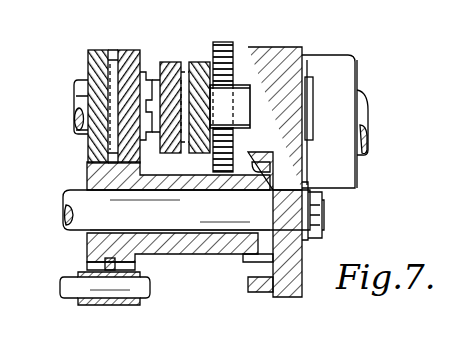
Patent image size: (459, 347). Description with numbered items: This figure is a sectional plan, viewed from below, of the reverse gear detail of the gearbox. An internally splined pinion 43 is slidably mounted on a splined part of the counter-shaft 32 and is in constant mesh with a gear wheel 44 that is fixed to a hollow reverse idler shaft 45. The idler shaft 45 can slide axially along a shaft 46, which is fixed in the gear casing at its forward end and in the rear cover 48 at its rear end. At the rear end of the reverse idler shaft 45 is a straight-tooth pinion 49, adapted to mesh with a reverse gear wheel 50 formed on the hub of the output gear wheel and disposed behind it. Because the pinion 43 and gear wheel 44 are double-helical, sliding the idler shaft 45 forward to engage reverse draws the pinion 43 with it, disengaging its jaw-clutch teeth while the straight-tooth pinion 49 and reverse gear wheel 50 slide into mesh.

The counter-shaft 32 is at (74, 108).
The internally splined pinion 43 is at (88, 59).
The gear wheel 44 is at (88, 264).
The hollow reverse idler shaft 45 is at (171, 255).
The shaft 46 is at (186, 210).
The rear cover 48 is at (303, 278).
The straight-tooth pinion 49 is at (249, 279).
The reverse gear wheel 50 is at (236, 50).